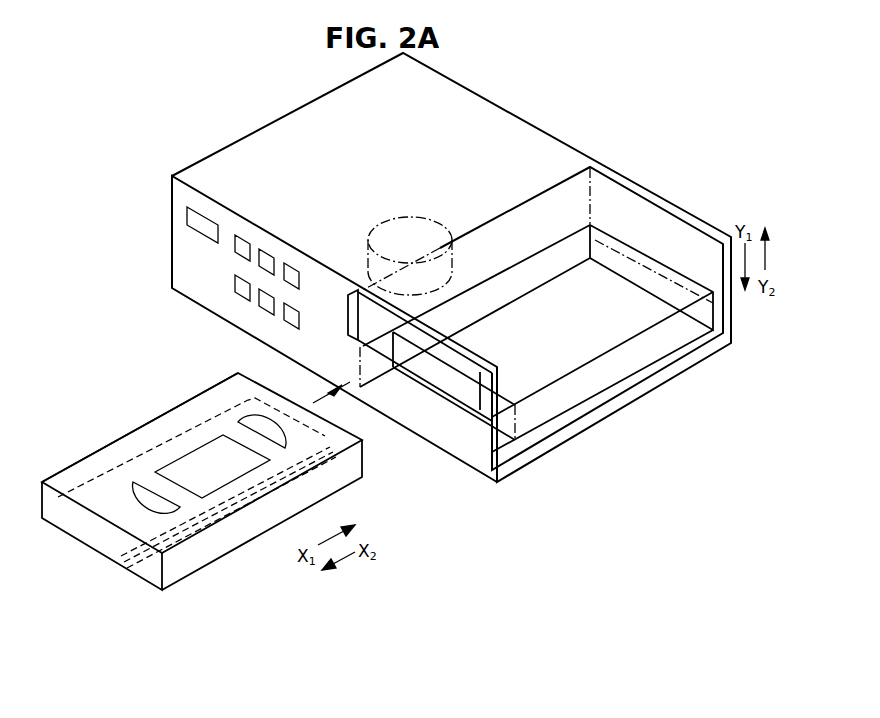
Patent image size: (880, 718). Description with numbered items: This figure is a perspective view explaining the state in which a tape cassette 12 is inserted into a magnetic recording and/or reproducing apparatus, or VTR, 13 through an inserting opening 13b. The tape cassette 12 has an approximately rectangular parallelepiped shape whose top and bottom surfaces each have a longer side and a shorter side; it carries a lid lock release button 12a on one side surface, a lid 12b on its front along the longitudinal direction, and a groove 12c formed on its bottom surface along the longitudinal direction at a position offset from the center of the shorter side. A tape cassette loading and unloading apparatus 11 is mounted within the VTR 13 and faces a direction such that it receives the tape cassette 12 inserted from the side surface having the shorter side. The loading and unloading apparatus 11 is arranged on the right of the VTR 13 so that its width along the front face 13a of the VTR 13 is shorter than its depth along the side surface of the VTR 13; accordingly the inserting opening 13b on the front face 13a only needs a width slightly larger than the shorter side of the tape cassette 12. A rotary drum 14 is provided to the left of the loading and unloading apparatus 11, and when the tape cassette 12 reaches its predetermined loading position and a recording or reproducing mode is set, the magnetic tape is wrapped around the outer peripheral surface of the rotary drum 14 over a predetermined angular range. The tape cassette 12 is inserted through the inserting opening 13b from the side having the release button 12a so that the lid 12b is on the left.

The tape cassette loading and unloading apparatus 11 is at (612, 400).
The tape cassette 12 is at (245, 533).
The lid lock release button 12a is at (253, 398).
The lid 12b is at (132, 435).
The groove 12c is at (122, 560).
The magnetic recording and/or reproducing apparatus 13 is at (245, 132).
The front face 13a is at (225, 310).
The inserting opening 13b is at (433, 370).
The rotary drum 14 is at (423, 217).